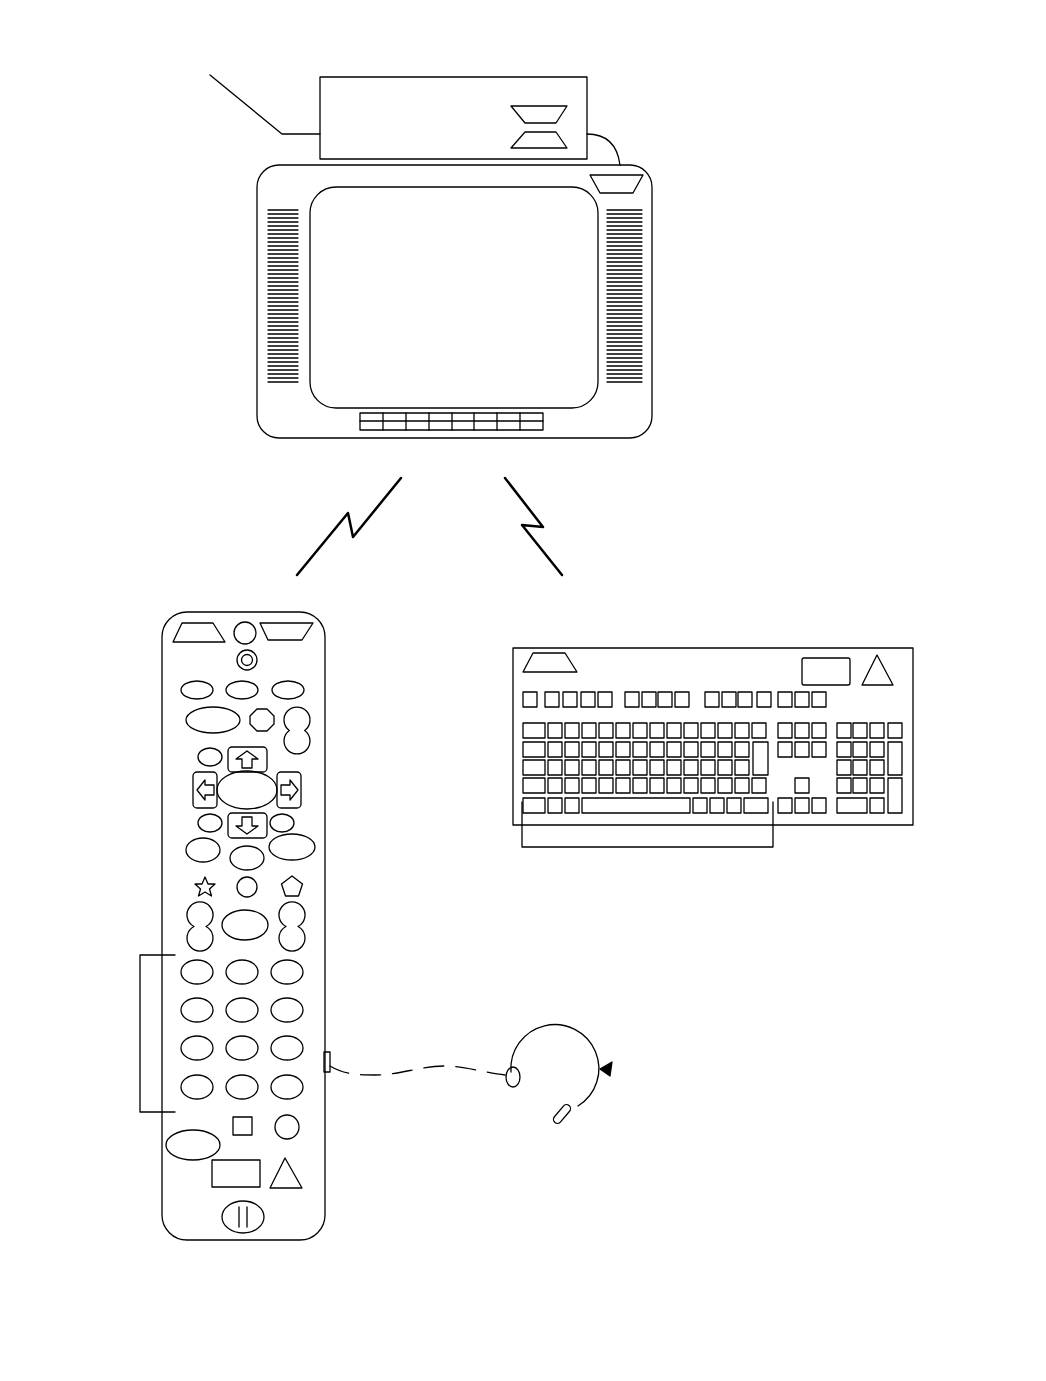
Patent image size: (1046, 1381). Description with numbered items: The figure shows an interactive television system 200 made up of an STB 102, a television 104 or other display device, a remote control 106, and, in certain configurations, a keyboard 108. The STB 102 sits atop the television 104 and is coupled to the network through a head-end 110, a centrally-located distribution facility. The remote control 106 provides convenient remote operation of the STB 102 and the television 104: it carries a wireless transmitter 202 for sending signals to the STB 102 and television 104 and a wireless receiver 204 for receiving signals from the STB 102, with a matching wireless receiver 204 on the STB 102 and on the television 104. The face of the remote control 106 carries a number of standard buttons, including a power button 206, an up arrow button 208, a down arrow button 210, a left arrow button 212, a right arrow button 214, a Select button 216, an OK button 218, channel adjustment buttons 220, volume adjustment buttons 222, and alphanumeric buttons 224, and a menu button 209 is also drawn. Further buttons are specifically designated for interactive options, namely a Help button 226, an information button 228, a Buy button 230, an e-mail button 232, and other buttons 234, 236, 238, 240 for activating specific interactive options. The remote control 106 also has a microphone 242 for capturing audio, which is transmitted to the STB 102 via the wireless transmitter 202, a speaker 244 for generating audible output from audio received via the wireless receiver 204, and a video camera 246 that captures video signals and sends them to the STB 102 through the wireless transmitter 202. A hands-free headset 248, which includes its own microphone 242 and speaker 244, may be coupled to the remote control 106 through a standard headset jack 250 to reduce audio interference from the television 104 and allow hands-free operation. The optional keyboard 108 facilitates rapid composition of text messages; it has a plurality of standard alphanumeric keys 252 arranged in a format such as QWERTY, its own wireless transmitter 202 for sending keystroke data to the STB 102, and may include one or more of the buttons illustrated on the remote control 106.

The interactive television system 200 is at (833, 42).
The head-end 110 is at (235, 91).
The set top box (STB) 102 is at (470, 121).
The television 104 is at (454, 301).
The remote control 106 is at (322, 885).
The keyboard 108 is at (712, 673).
The wireless transmitter 202 is at (560, 137).
The wireless receiver 204 is at (545, 106).
The power button 206 is at (182, 687).
The up arrow button 208 is at (325, 756).
The menu button 209 is at (188, 720).
The down arrow button 210 is at (227, 832).
The left arrow button 212 is at (192, 790).
The right arrow button 214 is at (302, 790).
The Select button 216 is at (267, 760).
The OK button 218 is at (233, 915).
The channel adjustment buttons 220 is at (190, 933).
The volume adjustment buttons 222 is at (300, 937).
The alphanumeric buttons 224 is at (138, 1043).
The Help button 226 is at (168, 1143).
The information button 228 is at (273, 710).
The Buy button 230 is at (315, 848).
The e-mail button 232 is at (212, 1175).
The button 234 is at (300, 900).
The button 236 is at (293, 1173).
The button 238 is at (197, 885).
The button 240 is at (252, 1115).
The microphone 242 is at (263, 1217).
The speaker 244 is at (233, 630).
The video camera 246 is at (257, 655).
The hands-free headset 248 is at (607, 1066).
The headset jack 250 is at (330, 1045).
The alphanumeric keys 252 is at (648, 848).